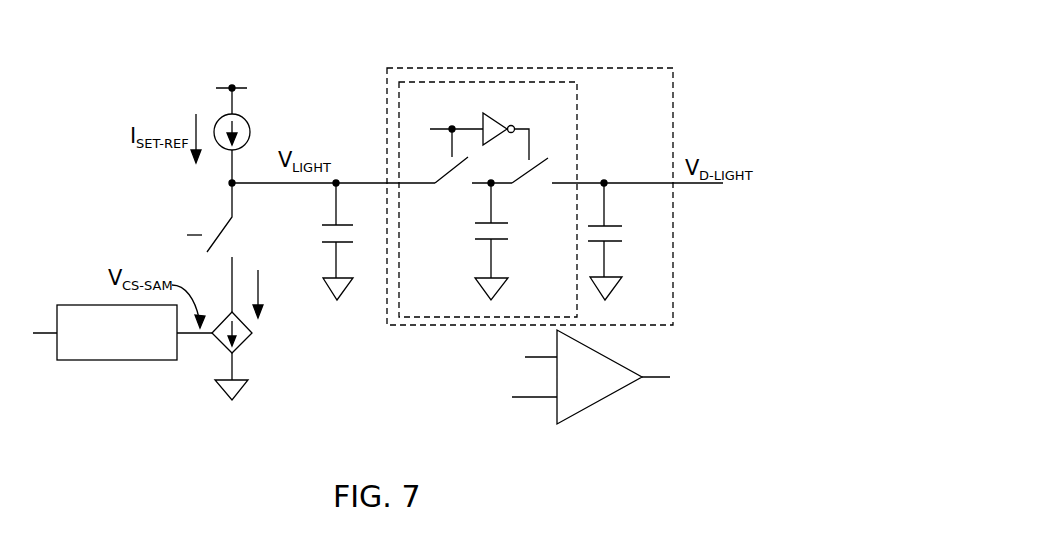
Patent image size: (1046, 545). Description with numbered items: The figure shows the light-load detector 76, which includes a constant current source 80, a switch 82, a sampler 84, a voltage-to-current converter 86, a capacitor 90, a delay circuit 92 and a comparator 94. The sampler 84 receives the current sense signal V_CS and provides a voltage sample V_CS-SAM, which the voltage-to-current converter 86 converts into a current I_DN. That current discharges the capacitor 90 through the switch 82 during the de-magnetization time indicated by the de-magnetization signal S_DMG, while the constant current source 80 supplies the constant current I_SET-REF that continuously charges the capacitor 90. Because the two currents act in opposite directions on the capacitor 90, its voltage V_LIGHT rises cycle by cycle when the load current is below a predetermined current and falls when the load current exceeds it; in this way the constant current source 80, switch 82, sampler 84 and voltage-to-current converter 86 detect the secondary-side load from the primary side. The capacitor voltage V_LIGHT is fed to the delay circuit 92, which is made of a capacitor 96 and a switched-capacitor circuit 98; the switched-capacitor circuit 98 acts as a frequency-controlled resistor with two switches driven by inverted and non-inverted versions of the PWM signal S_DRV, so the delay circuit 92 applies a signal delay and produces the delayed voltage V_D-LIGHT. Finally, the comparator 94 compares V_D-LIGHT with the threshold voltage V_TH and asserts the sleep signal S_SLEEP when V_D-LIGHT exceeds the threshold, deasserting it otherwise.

The light-load detector 76 is at (336, 68).
The constant current source 80 is at (243, 117).
The switch 82 is at (238, 239).
The sampler 84 is at (133, 351).
The voltage-to-current converter 86 is at (236, 350).
The capacitor 90 is at (351, 252).
The delay circuit 92 is at (672, 142).
The comparator 94 is at (595, 405).
The capacitor 96 is at (617, 241).
The switched-capacitor circuit 98 is at (577, 137).